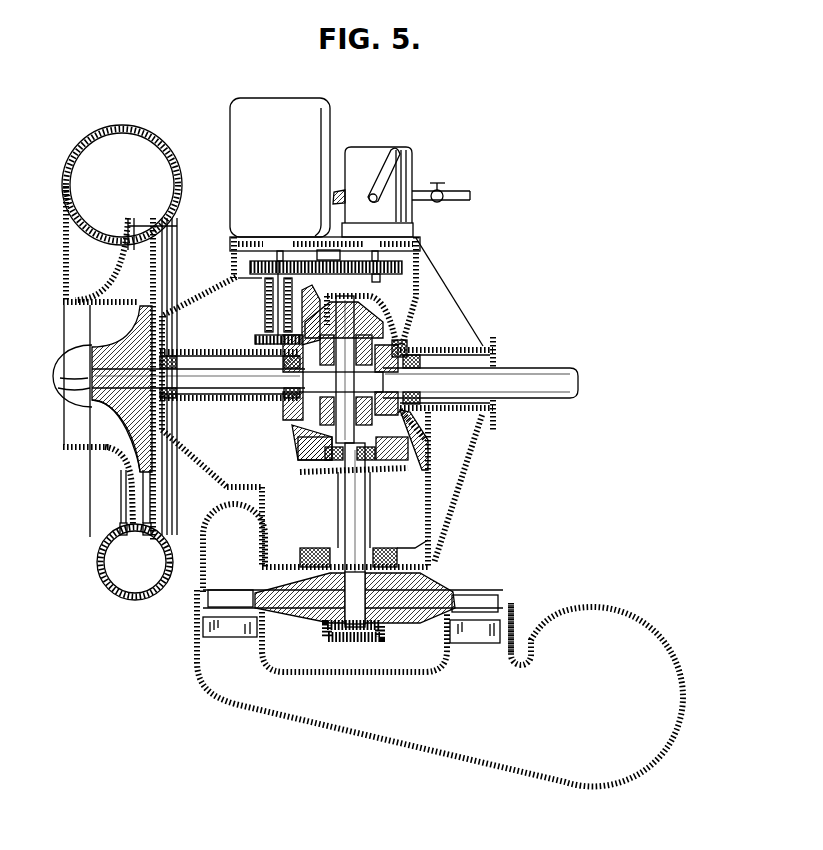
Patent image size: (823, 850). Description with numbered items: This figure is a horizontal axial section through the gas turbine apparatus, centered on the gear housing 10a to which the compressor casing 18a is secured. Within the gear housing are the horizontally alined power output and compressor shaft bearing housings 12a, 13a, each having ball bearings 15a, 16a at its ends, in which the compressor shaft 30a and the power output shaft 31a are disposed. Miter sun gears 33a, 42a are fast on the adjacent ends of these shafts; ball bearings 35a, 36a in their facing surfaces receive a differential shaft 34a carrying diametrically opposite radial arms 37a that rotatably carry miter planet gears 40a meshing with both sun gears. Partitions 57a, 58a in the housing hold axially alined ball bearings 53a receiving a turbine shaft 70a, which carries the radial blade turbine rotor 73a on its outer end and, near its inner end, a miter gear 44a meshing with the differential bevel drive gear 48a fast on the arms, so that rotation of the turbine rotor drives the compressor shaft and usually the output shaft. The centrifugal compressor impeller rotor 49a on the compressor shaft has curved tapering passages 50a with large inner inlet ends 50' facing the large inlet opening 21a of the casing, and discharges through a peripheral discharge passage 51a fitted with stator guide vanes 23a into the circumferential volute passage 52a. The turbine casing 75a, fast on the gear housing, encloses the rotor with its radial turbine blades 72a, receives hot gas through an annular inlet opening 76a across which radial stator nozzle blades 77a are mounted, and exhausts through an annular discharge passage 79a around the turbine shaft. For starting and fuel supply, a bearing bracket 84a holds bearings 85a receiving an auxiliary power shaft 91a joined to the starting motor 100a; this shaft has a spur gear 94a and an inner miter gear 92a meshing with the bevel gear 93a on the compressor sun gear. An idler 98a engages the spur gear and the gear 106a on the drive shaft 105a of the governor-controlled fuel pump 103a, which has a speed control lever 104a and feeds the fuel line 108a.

The starting motor 100a is at (245, 100).
The fuel line 108a is at (337, 190).
The variable governor-controlled fuel pump 103a is at (387, 167).
The speed control lever 104a is at (395, 167).
The drive shaft 105a is at (422, 250).
The spur gear 94a is at (250, 263).
The idler 98a is at (326, 274).
The gear 106a is at (390, 280).
The auxiliary power shaft 91a is at (277, 302).
The bearing bracket 84a is at (285, 320).
The bearings 85a is at (250, 280).
The miter gear 92a is at (258, 338).
The ball bearing 16a is at (283, 363).
The miter planet gears 40a is at (362, 333).
The miter sun gear 42a is at (398, 340).
The ball bearing 15a is at (408, 352).
The power output shaft bearing housing 12a is at (442, 360).
The power output shaft 31a is at (523, 372).
The ball bearing 36a is at (383, 376).
The differential shaft 34a is at (383, 384).
The inlet opening 21a is at (68, 337).
The centrifugal compressor impeller rotor 49a is at (110, 397).
The inner inlet ends 50' is at (61, 400).
The curved tapering passages 50a is at (103, 433).
The compressor shaft 30a is at (210, 378).
The compressor shaft bearing housing 13a is at (227, 395).
The ball bearing 35a is at (295, 405).
The bevel gear 93a is at (300, 420).
The miter sun gear 33a is at (282, 420).
The stator guide vanes 23a is at (133, 508).
The compressor casing 18a is at (150, 512).
The gear housing 10a is at (214, 462).
The peripheral discharge passage 51a is at (137, 530).
The circumferential volute passage 52a is at (133, 583).
The annular discharge passage 79a is at (234, 548).
The differential bevel drive gear 48a is at (302, 470).
The turbine shaft 70a is at (345, 513).
The miter gear 44a is at (383, 473).
The ball bearings 53a is at (380, 547).
The partition 58a is at (398, 549).
The radial arms 37a is at (385, 432).
The partition 57a is at (425, 452).
The radial turbine blades 72a is at (463, 600).
The turbine casing 75a is at (511, 568).
The annular inlet opening 76a is at (500, 652).
The radial stator nozzle blades 77a is at (467, 637).
The radial blade turbine rotor 73a is at (414, 613).